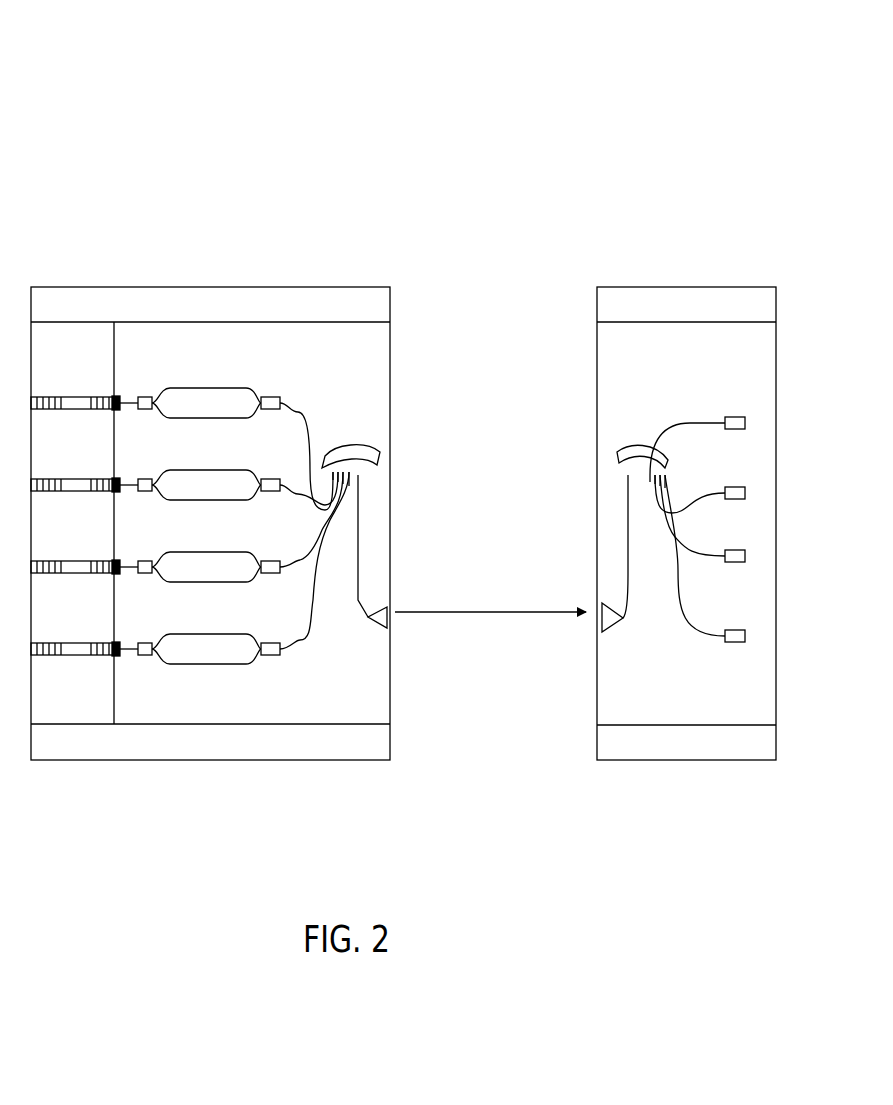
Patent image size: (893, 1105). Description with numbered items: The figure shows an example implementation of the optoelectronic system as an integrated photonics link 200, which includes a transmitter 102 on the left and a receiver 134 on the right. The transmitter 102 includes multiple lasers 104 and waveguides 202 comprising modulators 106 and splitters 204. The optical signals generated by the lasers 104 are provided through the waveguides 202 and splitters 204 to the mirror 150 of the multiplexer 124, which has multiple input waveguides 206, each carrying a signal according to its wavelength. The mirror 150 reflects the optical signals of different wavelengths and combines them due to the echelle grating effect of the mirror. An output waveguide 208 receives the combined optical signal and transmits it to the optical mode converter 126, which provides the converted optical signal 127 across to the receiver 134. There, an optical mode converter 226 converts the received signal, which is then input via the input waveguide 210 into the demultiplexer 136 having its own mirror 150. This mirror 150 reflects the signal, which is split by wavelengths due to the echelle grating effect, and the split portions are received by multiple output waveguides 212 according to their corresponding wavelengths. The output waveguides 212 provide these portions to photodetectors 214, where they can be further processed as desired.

The integrated photonics link 200 is at (534, 70).
The transmitter 102 is at (73, 760).
The lasers 104 is at (71, 380).
The modulators 106 is at (221, 698).
The multiplexer 124 is at (351, 414).
The optical mode converter 126 is at (385, 596).
The optical signal 127 is at (475, 614).
The receiver 134 is at (597, 760).
The demultiplexer 136 is at (628, 418).
The mirror 150 is at (358, 447).
The waveguides 202 is at (290, 393).
The splitters 204 is at (273, 667).
The input waveguides 206 is at (305, 620).
The output waveguide 208 is at (357, 525).
The input waveguide 210 is at (627, 563).
The output waveguides 212 is at (702, 637).
The photodetectors 214 is at (736, 408).
The optical mode converter 226 is at (598, 606).